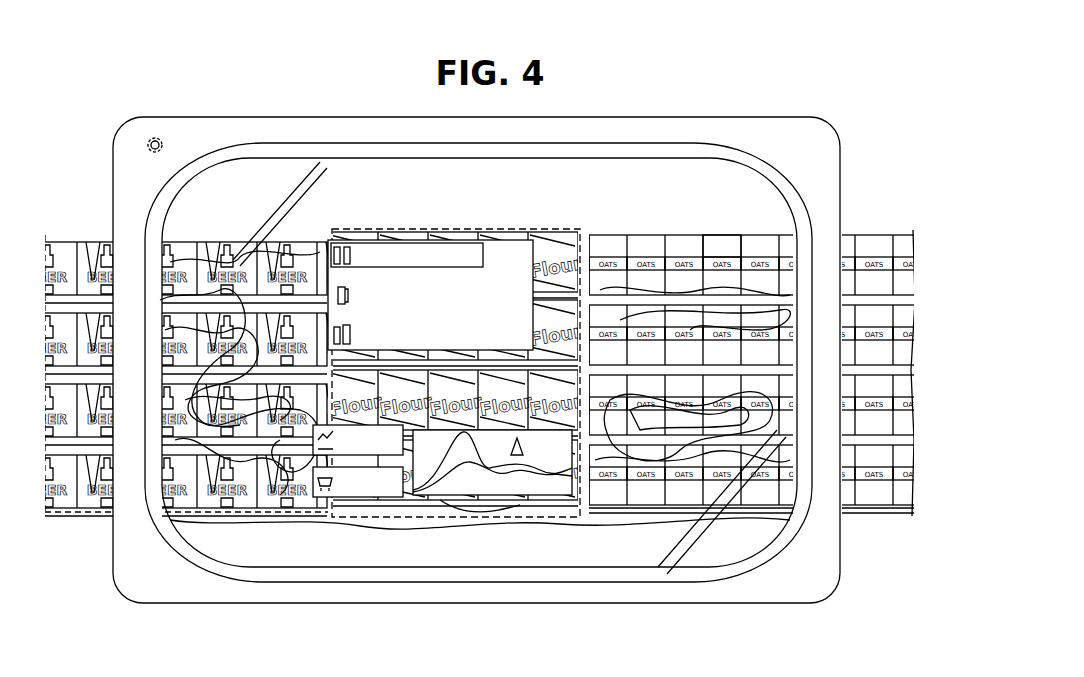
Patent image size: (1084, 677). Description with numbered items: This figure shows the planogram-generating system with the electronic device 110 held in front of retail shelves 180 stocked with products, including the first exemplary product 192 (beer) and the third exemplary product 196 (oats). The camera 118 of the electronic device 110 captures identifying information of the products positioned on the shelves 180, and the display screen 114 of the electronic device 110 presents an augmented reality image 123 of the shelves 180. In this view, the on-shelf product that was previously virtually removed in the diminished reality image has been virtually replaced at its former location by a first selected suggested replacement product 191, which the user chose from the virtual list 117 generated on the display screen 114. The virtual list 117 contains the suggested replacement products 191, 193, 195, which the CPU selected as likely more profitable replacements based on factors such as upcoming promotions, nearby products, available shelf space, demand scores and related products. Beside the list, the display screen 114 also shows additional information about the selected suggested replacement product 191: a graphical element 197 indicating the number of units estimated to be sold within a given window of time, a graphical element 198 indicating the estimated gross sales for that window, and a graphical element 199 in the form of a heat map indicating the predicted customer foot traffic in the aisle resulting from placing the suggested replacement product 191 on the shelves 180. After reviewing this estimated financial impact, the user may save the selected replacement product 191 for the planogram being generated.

The electronic device 110 is at (693, 117).
The display screen 114 is at (767, 188).
The virtual list 117 is at (439, 268).
The camera 118 is at (147, 142).
The augmented reality image 123 is at (668, 209).
The shelves 180 is at (488, 374).
The suggested replacement product 191 is at (351, 245).
The first exemplary product 192 is at (212, 248).
The suggested replacement product 193 is at (345, 292).
The suggested replacement product 195 is at (345, 335).
The third exemplary product 196 is at (722, 248).
The graphical element 197 is at (432, 495).
The graphical element 198 is at (410, 500).
The graphical element 199 is at (558, 448).